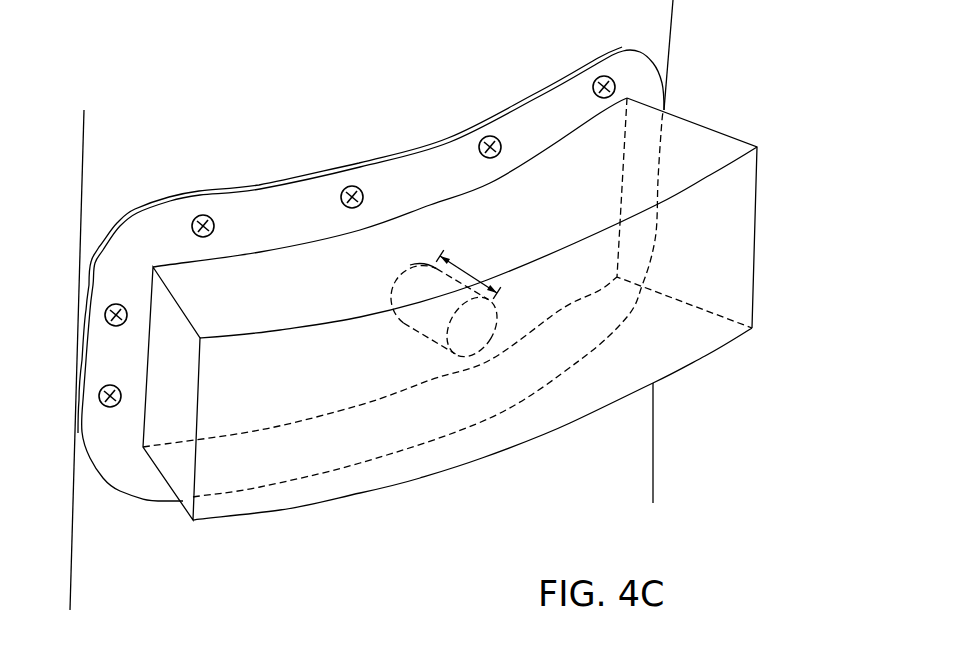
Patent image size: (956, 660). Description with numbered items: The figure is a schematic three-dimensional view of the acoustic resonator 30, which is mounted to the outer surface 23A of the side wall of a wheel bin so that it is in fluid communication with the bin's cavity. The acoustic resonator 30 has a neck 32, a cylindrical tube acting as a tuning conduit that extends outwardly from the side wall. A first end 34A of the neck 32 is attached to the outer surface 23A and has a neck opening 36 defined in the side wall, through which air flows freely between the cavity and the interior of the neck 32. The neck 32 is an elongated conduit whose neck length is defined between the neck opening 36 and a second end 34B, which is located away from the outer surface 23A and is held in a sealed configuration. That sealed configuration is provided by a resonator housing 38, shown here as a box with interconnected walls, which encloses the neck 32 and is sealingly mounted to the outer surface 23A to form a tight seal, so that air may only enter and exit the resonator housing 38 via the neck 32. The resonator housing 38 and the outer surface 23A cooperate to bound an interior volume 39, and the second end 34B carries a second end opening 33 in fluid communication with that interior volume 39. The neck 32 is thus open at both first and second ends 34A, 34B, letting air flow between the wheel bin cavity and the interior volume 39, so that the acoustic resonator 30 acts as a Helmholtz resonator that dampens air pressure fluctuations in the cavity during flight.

The acoustic resonator 30 is at (458, 305).
The outer surface 23A is at (277, 174).
The neck 32 is at (412, 325).
The second end opening 33 is at (470, 327).
The first end 34A is at (424, 240).
The second end 34B is at (447, 378).
The neck opening 36 is at (415, 288).
The resonator housing 38 is at (707, 126).
The interior volume 39 is at (663, 272).